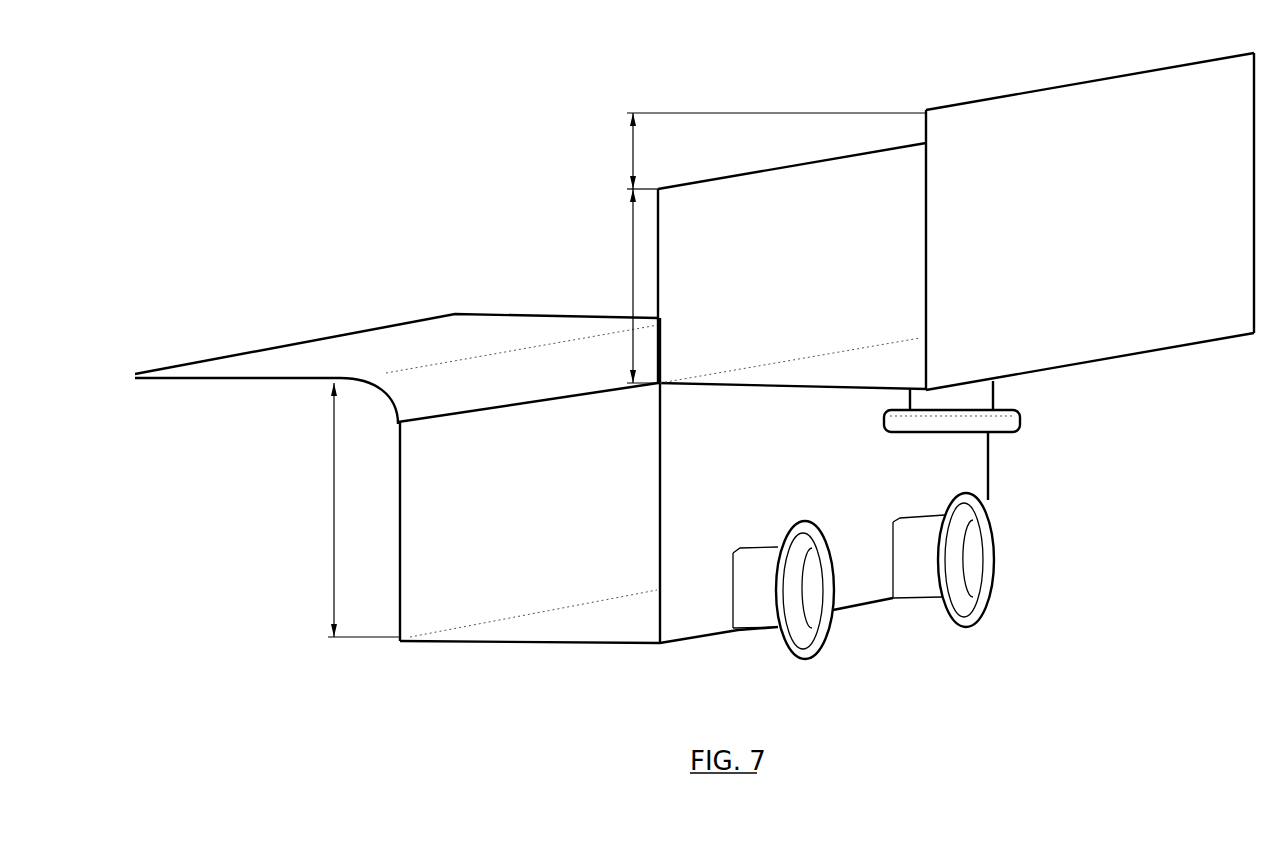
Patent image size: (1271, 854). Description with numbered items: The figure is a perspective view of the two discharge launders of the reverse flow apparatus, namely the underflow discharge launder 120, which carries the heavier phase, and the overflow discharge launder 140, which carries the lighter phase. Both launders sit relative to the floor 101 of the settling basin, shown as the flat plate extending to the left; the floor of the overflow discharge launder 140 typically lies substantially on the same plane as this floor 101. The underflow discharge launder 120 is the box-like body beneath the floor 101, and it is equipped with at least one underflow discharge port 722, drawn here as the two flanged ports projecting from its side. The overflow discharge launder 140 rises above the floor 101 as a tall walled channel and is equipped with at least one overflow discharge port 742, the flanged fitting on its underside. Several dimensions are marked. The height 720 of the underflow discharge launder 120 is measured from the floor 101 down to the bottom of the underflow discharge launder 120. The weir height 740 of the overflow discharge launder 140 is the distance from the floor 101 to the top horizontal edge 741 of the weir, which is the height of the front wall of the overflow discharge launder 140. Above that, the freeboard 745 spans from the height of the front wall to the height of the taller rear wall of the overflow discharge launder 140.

The floor of the settling basin 101 is at (386, 355).
The underflow discharge launder 120 is at (533, 572).
The overflow discharge launder 140 is at (821, 268).
The top horizontal edge of the weir 741 is at (740, 176).
The overflow discharge port 742 is at (963, 425).
The underflow discharge port 722 is at (813, 602).
The freeboard 745 is at (633, 152).
The weir height 740 is at (633, 289).
The height of underflow discharge launder 720 is at (334, 506).